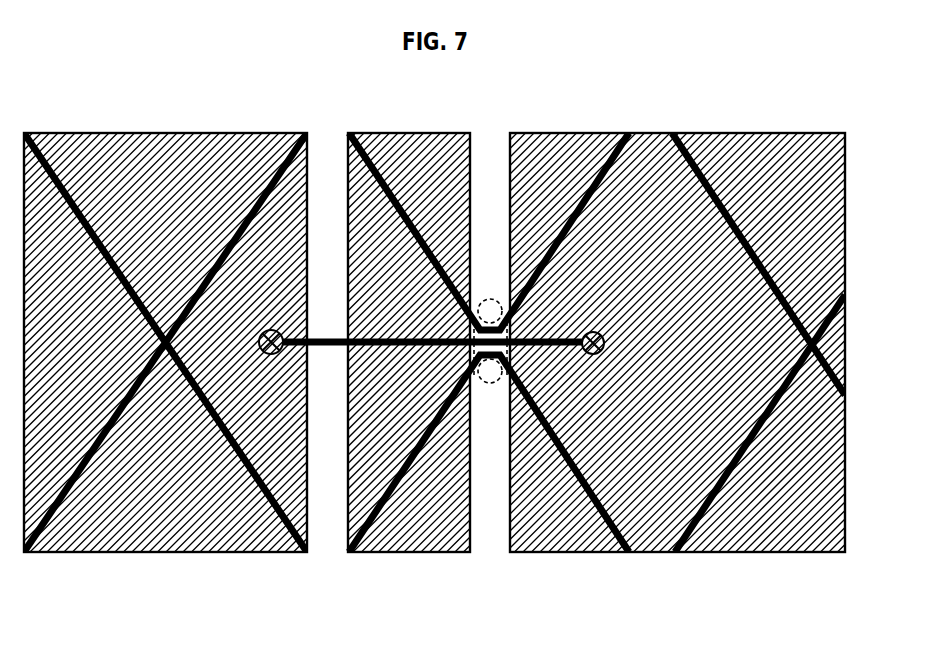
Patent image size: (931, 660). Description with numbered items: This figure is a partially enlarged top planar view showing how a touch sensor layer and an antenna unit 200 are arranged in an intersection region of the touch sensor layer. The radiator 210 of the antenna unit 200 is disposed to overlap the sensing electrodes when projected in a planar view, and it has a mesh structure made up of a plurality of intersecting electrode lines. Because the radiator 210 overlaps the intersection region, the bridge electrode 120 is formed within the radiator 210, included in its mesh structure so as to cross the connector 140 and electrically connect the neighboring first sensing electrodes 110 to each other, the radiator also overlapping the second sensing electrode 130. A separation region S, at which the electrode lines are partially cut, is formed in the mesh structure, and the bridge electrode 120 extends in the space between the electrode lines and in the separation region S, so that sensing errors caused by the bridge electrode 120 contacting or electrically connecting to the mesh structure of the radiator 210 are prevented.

The first sensing electrode 110 is at (113, 542).
The bridge electrode 120 is at (538, 348).
The second sensing electrode 130 is at (465, 381).
The connector 140 is at (410, 543).
The antenna unit 200 is at (176, 381).
The radiator 210 is at (268, 513).
The separation region S is at (494, 297).